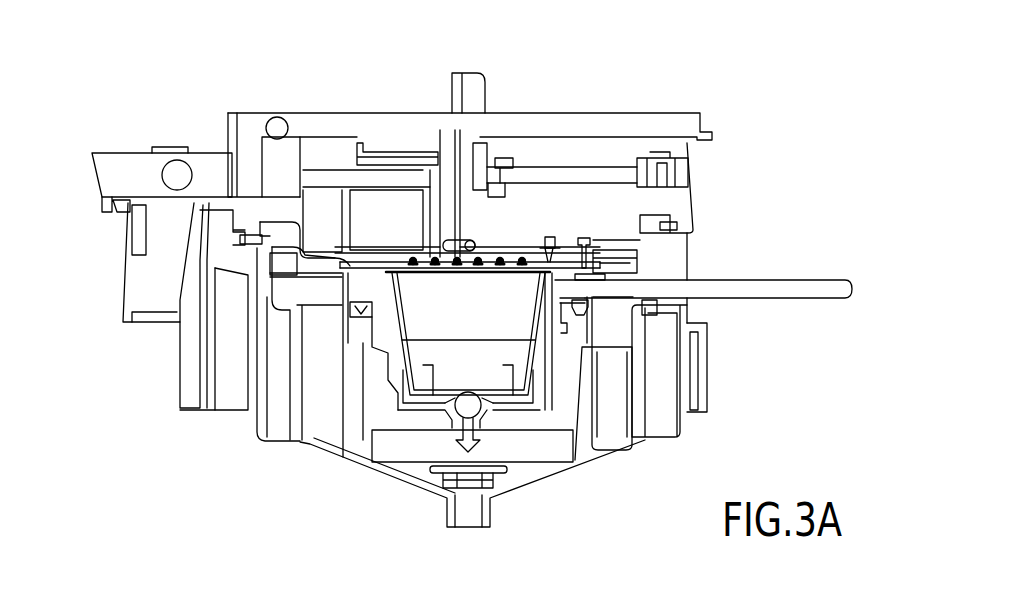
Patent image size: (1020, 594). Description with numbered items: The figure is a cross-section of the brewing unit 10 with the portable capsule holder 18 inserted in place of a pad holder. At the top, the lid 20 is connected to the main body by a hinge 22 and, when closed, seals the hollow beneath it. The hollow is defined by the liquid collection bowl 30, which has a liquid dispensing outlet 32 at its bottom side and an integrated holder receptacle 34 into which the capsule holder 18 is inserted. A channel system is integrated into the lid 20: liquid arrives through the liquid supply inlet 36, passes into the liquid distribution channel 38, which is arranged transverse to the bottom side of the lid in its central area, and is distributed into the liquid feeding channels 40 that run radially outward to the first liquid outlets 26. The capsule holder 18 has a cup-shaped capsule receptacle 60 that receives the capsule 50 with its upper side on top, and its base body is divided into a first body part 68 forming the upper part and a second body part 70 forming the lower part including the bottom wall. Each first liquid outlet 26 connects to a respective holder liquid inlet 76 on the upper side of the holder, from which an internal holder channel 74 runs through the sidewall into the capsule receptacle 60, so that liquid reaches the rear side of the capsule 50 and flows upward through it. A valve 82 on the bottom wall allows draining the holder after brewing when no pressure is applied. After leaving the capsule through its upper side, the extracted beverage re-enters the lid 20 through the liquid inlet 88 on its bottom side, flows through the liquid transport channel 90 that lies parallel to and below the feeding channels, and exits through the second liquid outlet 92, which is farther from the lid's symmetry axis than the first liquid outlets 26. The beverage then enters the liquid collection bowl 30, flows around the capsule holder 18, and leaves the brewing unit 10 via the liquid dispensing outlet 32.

The brewing unit 10 is at (785, 112).
The portable capsule holder 18 is at (819, 291).
The lid 20 is at (622, 122).
The hinge 22 is at (176, 168).
The first liquid outlets 26 is at (565, 272).
The liquid collection bowl 30 is at (637, 397).
The liquid dispensing outlet 32 is at (472, 516).
The holder receptacle 34 is at (585, 423).
The liquid supply inlet 36 is at (386, 156).
The liquid distribution channel 38 is at (450, 183).
The liquid feeding channels 40 is at (535, 247).
The capsule 50 is at (398, 312).
The capsule receptacle 60 is at (428, 327).
The first body part 68 is at (338, 256).
The second body part 70 is at (383, 420).
The internal holder channel 74 is at (588, 294).
The holder liquid inlet 76 is at (593, 285).
The valve 82 is at (480, 407).
The liquid inlet 88 is at (438, 262).
The liquid transport channel 90 is at (367, 255).
The second liquid outlet 92 is at (362, 283).